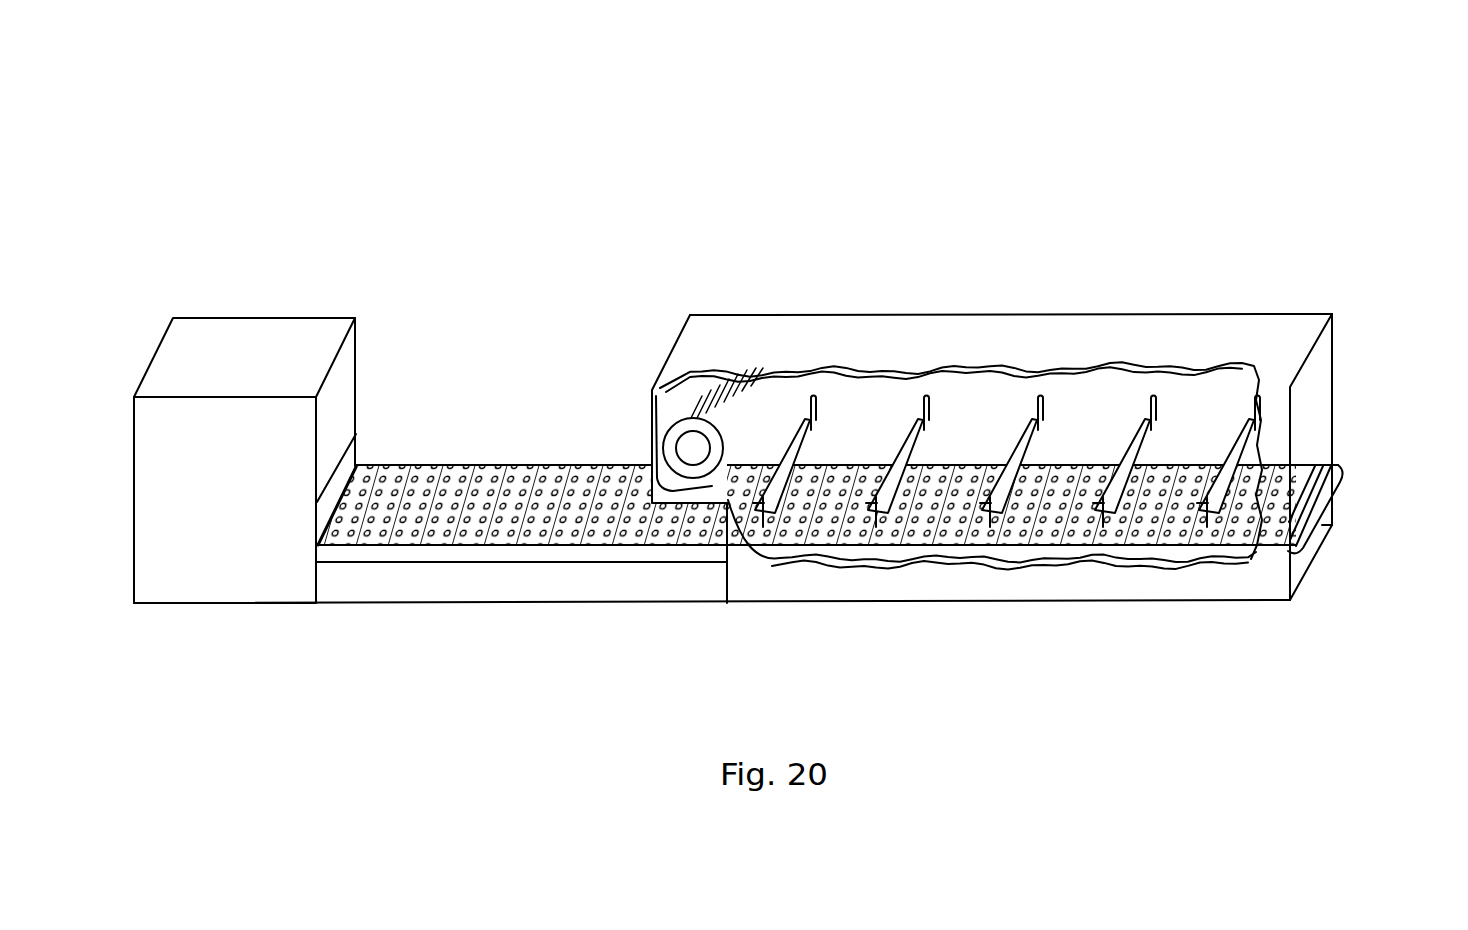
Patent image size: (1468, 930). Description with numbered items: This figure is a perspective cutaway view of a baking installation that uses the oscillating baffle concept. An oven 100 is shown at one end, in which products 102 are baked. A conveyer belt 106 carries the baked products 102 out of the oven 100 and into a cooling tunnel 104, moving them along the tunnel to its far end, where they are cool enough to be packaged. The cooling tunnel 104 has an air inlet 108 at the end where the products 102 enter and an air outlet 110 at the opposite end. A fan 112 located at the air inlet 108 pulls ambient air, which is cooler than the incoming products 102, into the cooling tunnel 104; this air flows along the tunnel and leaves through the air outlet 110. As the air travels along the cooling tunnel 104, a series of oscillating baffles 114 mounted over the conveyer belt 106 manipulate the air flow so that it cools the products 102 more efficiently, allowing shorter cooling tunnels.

The oven 100 is at (262, 352).
The products 102 is at (413, 468).
The cooling tunnel 104 is at (907, 350).
The conveyer belt 106 is at (525, 552).
The air inlet 108 is at (982, 321).
The air outlet 110 is at (1318, 447).
The fan 112 is at (713, 459).
The oscillating baffles 114 is at (813, 400).